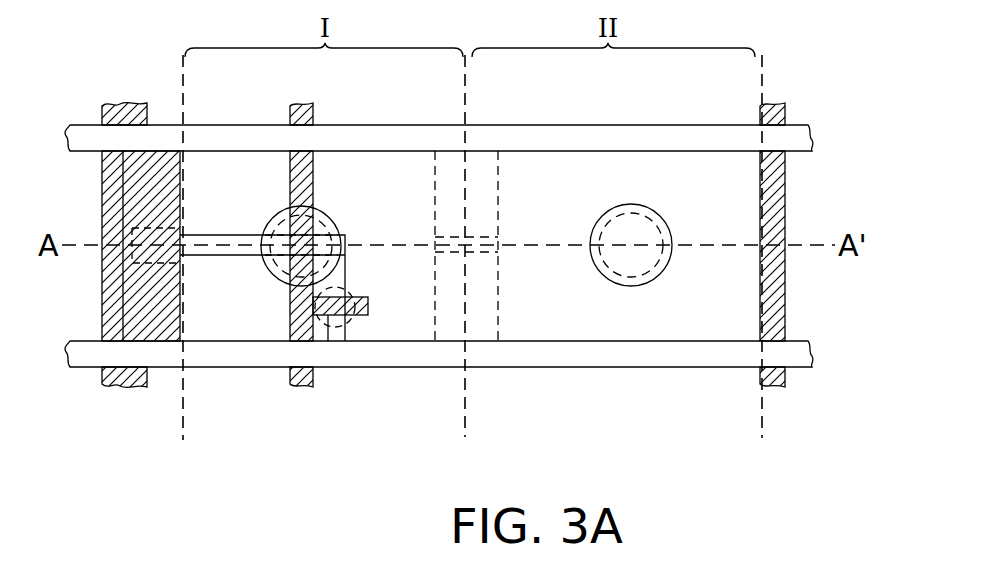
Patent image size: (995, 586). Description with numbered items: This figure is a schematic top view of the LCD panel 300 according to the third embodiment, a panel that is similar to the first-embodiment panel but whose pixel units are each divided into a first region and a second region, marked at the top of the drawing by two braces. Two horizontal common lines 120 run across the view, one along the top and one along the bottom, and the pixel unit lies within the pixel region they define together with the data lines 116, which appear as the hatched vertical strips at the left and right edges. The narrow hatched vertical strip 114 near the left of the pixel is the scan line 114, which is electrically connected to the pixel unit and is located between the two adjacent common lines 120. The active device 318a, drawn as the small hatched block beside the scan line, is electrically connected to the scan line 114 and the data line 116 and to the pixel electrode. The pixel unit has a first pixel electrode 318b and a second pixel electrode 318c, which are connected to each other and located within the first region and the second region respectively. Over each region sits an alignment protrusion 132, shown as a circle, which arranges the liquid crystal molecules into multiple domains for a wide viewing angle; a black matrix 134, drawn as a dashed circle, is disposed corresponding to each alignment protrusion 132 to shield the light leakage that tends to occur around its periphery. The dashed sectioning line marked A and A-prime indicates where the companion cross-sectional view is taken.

The scan line 114 is at (298, 318).
The data line 116 is at (120, 355).
The common line 120 is at (108, 316).
The alignment protrusion 132 is at (318, 236).
The black matrix 134 is at (332, 222).
The LCD panel 300 is at (830, 463).
The active device 318a is at (357, 318).
The first pixel electrode 318b is at (402, 318).
The second pixel electrode 318c is at (565, 305).